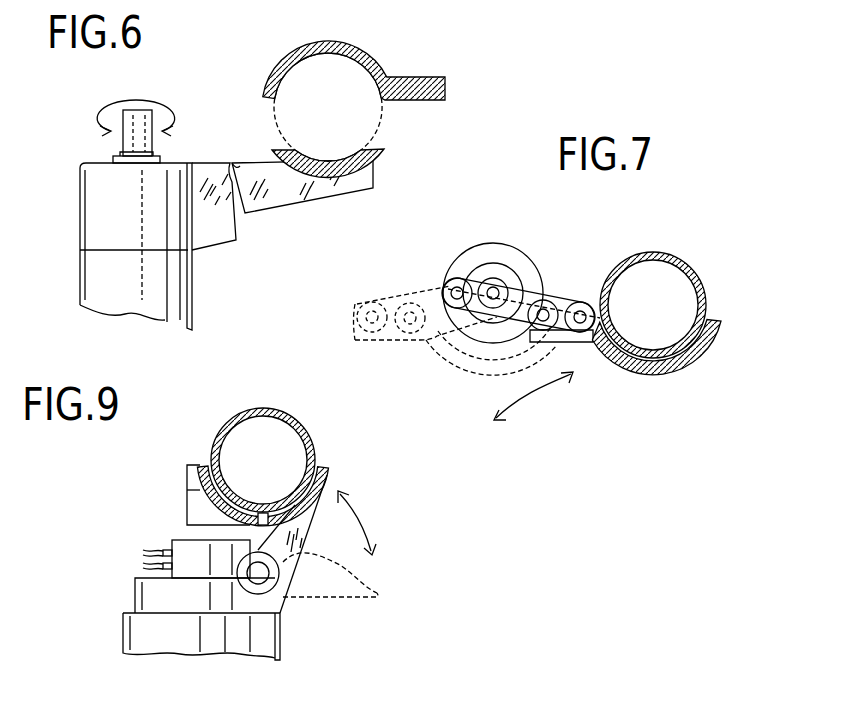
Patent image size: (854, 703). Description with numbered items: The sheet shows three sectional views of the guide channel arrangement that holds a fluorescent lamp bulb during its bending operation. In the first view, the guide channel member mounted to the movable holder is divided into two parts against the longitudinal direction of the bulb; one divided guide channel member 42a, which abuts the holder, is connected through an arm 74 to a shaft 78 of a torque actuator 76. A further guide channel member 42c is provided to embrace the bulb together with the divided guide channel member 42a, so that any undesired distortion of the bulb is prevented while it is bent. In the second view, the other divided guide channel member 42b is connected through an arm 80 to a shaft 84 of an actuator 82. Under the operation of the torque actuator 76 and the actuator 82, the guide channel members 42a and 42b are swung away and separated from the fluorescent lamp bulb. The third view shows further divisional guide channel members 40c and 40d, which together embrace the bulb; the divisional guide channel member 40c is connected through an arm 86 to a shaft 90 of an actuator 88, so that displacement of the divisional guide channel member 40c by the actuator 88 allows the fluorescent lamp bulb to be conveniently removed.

In FIG. 6, the shaft 78 is at (140, 118).
In FIG. 6, the torque actuator 76 is at (173, 297).
In FIG. 6, the arm 74 is at (287, 188).
In FIG. 6, the divided guide channel member 42a is at (343, 42).
In FIG. 6, the guide channel member 42c is at (334, 166).
In FIG. 7, the divided guide channel member 42b is at (640, 366).
In FIG. 7, the actuator 82 is at (503, 262).
In FIG. 7, the arm 80 is at (520, 298).
In FIG. 7, the shaft 84 is at (493, 288).
In FIG. 9, the divisional guide channel member 40c is at (327, 483).
In FIG. 9, the divisional guide channel member 40d is at (200, 480).
In FIG. 9, the arm 86 is at (302, 537).
In FIG. 9, the actuator 88 is at (175, 545).
In FIG. 9, the shaft 90 is at (258, 573).